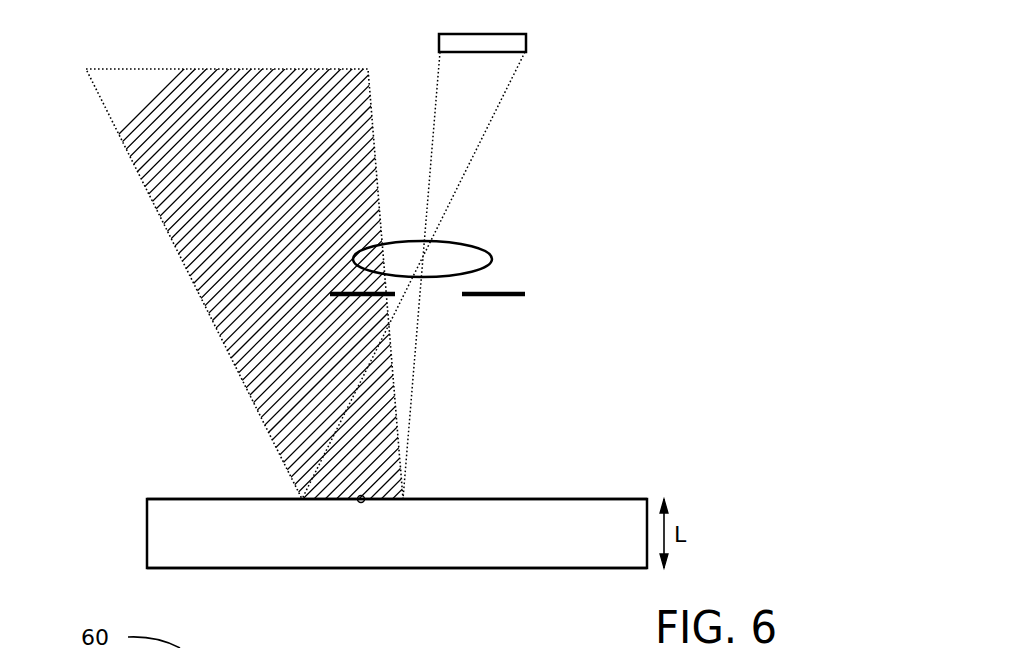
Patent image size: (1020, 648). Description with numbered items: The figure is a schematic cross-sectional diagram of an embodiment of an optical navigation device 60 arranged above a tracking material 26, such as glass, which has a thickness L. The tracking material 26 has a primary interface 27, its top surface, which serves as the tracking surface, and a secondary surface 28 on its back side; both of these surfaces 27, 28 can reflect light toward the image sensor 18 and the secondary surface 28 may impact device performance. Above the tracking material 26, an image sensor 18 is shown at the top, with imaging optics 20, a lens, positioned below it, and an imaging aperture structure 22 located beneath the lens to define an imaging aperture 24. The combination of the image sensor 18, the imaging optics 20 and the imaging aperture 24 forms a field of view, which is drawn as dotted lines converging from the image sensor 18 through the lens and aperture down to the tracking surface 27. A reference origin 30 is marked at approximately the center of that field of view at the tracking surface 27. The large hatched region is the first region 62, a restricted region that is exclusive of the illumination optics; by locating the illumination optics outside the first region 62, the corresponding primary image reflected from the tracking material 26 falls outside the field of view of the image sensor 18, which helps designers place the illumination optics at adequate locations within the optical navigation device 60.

The optical navigation device 60 is at (192, 41).
The first region 62 is at (206, 252).
The image sensor 18 is at (527, 42).
The imaging optics 20 is at (478, 243).
The imaging aperture structure 22 is at (520, 291).
The imaging aperture 24 is at (452, 302).
The reference origin 30 is at (365, 497).
The tracking material 26 is at (467, 525).
The primary interface 27 is at (538, 482).
The secondary surface 28 is at (578, 551).